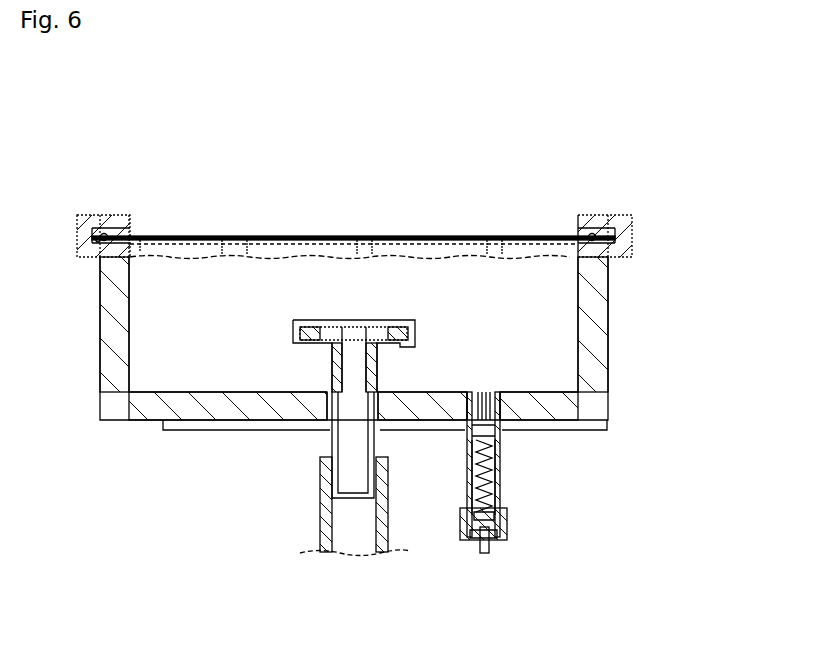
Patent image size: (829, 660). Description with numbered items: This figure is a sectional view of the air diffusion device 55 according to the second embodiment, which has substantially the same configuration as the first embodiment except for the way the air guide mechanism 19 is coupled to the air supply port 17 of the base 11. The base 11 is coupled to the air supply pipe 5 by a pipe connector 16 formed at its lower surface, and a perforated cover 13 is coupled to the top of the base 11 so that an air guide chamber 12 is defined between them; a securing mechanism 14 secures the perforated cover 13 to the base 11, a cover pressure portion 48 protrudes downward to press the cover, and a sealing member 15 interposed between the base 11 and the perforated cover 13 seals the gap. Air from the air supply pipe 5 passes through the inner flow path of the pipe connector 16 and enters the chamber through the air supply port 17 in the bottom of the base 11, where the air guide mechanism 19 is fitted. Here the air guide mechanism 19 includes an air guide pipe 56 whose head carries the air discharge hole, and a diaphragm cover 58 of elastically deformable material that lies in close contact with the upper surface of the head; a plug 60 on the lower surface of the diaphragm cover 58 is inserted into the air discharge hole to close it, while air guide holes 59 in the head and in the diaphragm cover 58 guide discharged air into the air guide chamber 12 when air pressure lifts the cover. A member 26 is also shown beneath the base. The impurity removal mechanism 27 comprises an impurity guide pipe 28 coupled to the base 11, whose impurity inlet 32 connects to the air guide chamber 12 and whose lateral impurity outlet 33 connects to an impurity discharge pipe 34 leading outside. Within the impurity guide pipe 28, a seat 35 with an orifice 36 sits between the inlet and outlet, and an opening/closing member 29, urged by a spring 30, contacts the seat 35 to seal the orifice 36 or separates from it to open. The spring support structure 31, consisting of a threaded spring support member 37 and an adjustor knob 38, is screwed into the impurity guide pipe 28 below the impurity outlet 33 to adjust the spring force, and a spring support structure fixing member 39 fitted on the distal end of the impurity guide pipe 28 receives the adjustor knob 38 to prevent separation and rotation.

The air diffusion device 55 is at (128, 82).
The base 11 is at (100, 352).
The air guide chamber 12 is at (158, 380).
The perforated cover 13 is at (283, 232).
The securing mechanism 14 is at (658, 232).
The sealing member 15 is at (593, 232).
The cover pressure portion 48 is at (112, 232).
The pipe connector 16 is at (329, 448).
The air supply port 17 is at (333, 395).
The air guide mechanism 19 is at (428, 332).
The seal plate 26 is at (256, 430).
The impurity removal mechanism 27 is at (525, 537).
The impurity guide pipe 28 is at (471, 470).
The opening/closing member 29 is at (470, 430).
The spring 30 is at (497, 509).
The spring support structure 31 is at (475, 562).
The impurity inlet 32 is at (468, 398).
The impurity outlet 33 is at (500, 468).
The impurity discharge pipe 34 is at (502, 434).
The seat 35 is at (495, 400).
The orifice 36 is at (479, 400).
The spring support member 37 is at (462, 520).
The adjustor knob 38 is at (486, 554).
The spring support structure fixing member 39 is at (505, 541).
The air supply pipe 5 is at (320, 528).
The air guide pipe 56 is at (327, 361).
The diaphragm cover 58 is at (297, 330).
The air guide holes 59 is at (305, 326).
The plug 60 is at (358, 326).